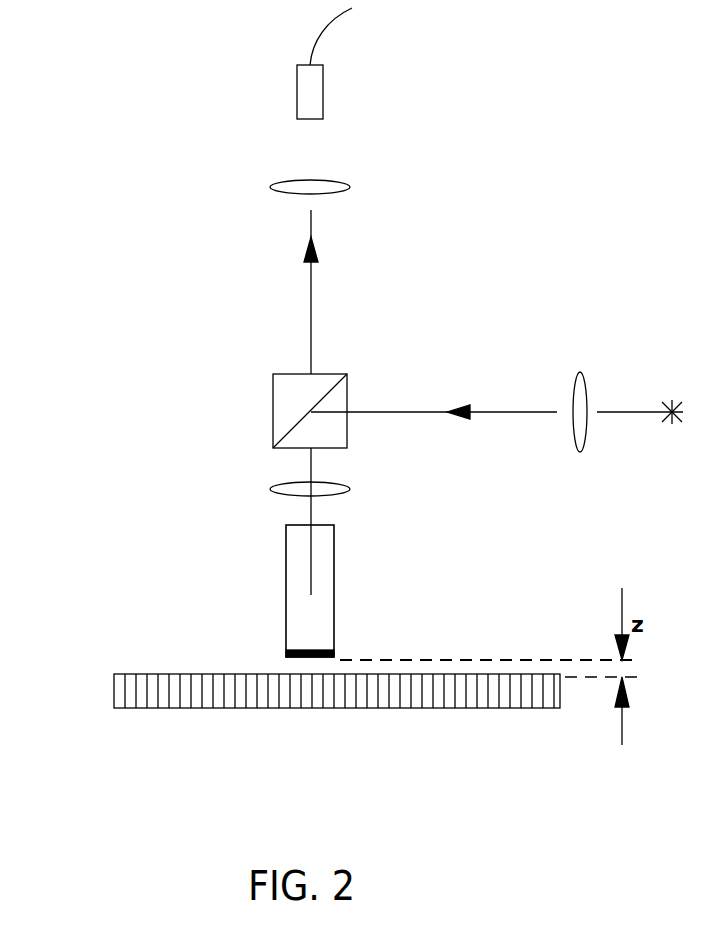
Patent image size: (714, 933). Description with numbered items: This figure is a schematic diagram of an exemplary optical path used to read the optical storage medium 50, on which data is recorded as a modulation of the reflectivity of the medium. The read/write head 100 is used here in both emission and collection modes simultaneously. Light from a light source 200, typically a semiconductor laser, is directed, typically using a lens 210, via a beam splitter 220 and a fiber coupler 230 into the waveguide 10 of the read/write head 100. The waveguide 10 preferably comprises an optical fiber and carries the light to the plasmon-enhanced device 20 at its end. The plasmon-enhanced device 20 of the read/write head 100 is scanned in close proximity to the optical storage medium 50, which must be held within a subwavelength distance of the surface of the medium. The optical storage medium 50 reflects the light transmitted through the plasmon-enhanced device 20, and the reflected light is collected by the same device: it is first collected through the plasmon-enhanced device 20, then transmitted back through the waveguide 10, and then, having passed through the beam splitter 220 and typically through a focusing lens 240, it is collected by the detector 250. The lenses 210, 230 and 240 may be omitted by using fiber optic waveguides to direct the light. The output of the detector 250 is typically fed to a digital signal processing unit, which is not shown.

The detector 250 is at (343, 63).
The focusing lens 240 is at (345, 188).
The beam splitter 220 is at (275, 411).
The lens 210 is at (566, 433).
The light source 200 is at (668, 436).
The fiber coupler 230 is at (345, 490).
The waveguide 10 is at (322, 595).
The read/write head 100 is at (266, 616).
The plasmon-enhanced device 20 is at (262, 655).
The optical storage medium 50 is at (114, 708).